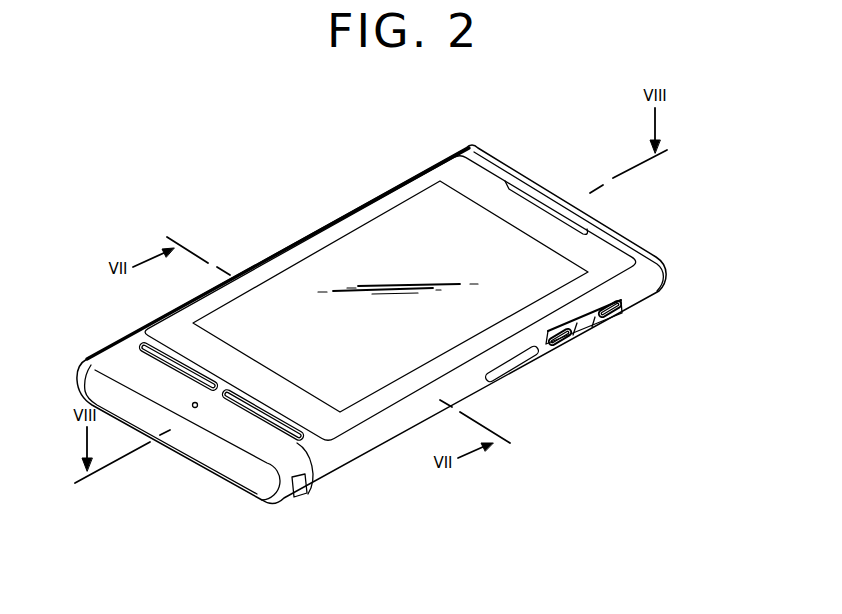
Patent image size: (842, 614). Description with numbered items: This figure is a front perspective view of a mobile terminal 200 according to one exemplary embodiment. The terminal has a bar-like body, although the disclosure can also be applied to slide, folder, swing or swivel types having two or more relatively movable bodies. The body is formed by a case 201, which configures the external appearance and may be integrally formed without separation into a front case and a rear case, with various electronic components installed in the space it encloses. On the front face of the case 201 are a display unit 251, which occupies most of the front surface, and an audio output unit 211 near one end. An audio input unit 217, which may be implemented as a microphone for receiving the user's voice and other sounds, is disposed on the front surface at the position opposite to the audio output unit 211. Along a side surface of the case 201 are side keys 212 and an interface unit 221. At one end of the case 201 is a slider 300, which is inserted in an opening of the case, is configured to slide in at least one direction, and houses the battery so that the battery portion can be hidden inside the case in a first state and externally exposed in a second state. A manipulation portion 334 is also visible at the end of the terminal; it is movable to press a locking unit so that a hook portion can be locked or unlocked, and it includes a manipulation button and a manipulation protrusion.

The mobile terminal 200 is at (296, 193).
The case 201 is at (634, 294).
The audio output unit 211 is at (537, 200).
The side keys 212 is at (586, 323).
The audio input unit 217 is at (192, 405).
The interface unit 221 is at (512, 366).
The display unit 251 is at (392, 228).
The slider 300 is at (232, 478).
The manipulation portion 334 is at (304, 490).